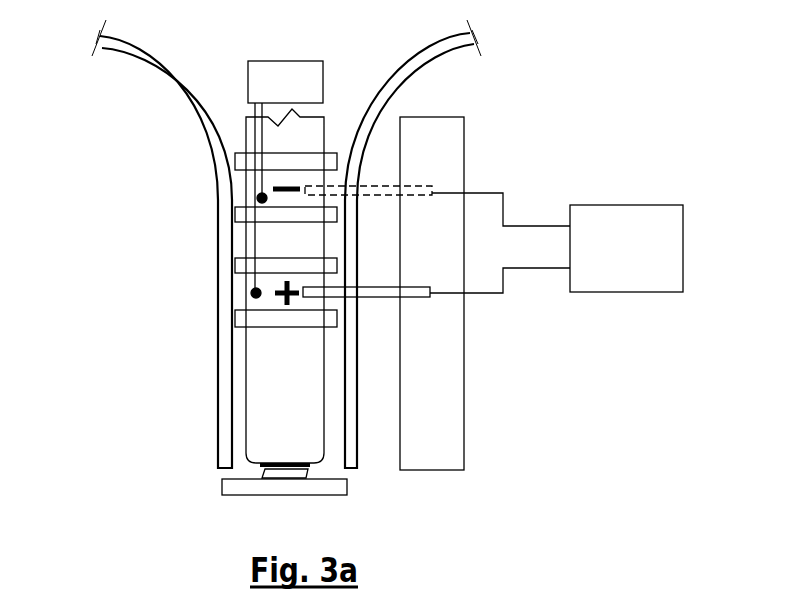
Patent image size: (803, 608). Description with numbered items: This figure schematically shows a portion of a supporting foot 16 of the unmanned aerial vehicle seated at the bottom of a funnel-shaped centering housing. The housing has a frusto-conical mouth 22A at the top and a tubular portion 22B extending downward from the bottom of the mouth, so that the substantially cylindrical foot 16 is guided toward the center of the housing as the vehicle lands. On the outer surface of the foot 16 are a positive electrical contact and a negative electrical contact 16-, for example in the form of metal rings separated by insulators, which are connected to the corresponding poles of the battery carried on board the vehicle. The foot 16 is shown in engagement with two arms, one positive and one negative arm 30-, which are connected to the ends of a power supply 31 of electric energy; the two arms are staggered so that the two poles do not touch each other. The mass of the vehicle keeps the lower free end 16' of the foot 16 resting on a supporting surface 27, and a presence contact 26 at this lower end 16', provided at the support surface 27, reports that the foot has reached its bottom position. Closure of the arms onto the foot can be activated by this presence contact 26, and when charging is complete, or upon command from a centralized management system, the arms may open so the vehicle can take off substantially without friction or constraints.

The frusto-conical mouth 22A is at (112, 33).
The tubular portion 22B is at (218, 377).
The supporting foot 16 is at (187, 262).
The negative electrical contact 16- is at (248, 188).
The negative arm 30- is at (362, 195).
The power supply 31 is at (626, 248).
The lower free end 16' is at (338, 501).
The presence contact 26 is at (263, 468).
The supporting surface 27 is at (273, 490).